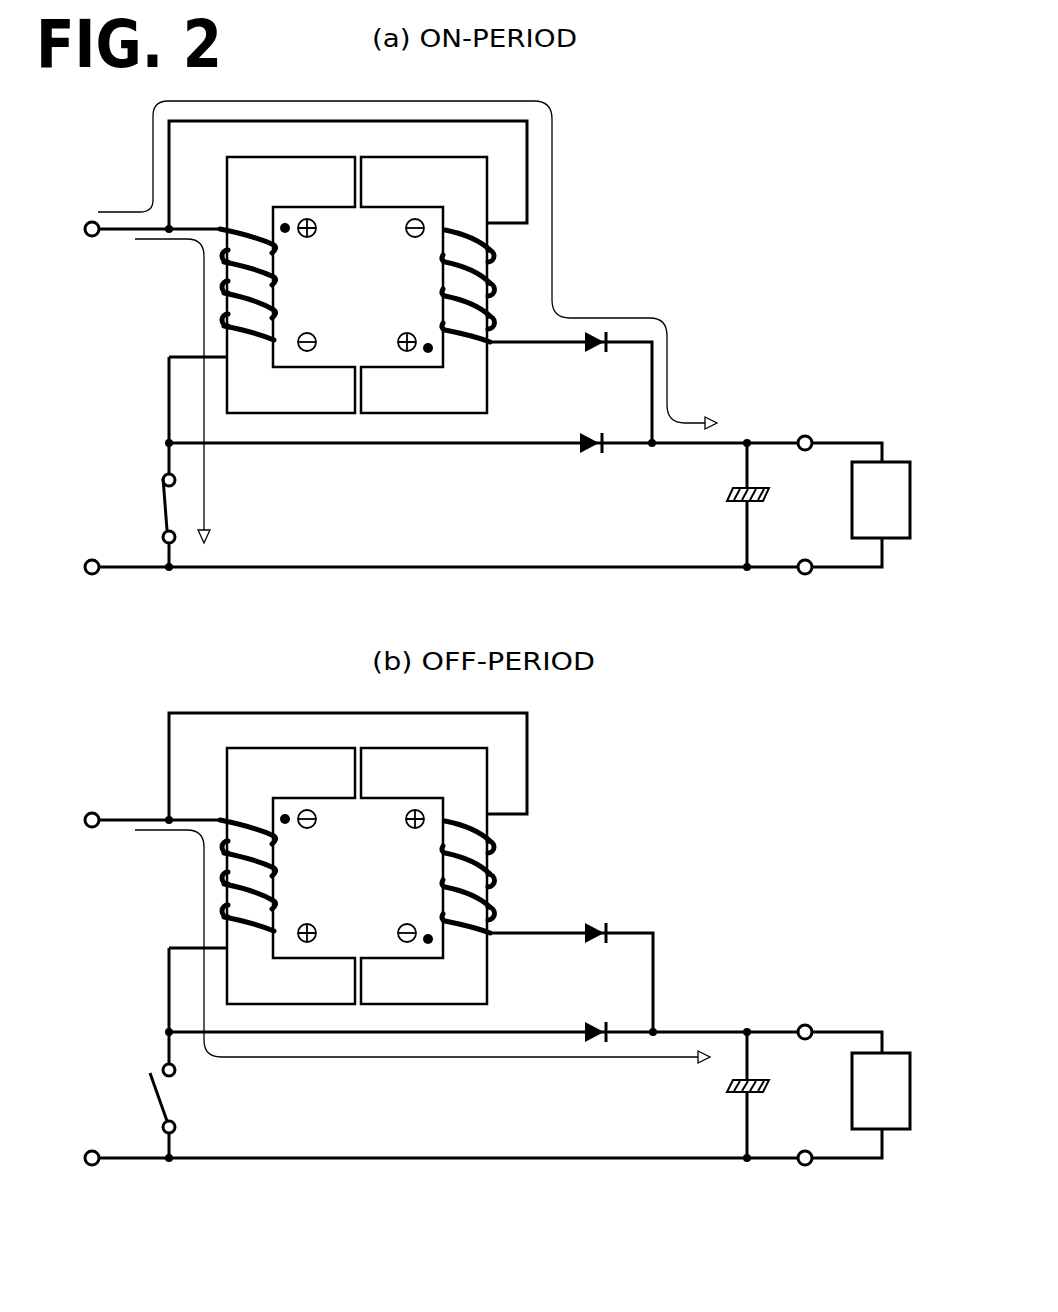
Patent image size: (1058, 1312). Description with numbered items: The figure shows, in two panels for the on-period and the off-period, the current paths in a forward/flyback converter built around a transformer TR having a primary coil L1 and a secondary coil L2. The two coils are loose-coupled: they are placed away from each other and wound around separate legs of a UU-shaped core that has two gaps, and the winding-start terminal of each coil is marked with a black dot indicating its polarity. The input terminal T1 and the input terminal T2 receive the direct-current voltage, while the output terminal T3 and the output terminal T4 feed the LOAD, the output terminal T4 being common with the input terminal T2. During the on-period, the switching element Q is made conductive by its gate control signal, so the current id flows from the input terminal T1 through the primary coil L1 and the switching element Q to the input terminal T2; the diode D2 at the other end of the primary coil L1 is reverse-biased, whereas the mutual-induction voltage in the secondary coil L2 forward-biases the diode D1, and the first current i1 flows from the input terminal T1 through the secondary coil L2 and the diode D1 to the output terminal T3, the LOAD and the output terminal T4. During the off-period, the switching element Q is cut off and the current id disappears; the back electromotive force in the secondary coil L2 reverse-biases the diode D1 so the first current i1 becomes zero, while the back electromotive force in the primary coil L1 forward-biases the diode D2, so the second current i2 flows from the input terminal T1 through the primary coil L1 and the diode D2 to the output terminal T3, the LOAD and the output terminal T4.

The input terminal T1 is at (130, 231).
The input terminal T2 is at (70, 569).
The output terminal T3 is at (812, 423).
The output terminal T4 is at (806, 592).
The transformer TR is at (367, 285).
The primary coil L1 is at (268, 284).
The secondary coil L2 is at (445, 286).
The diode D1 is at (597, 360).
The diode D2 is at (586, 460).
The switching element Q is at (156, 508).
The load LOAD is at (881, 500).
The current id is at (172, 391).
The first current i1 is at (634, 314).
The second current i2 is at (422, 961).